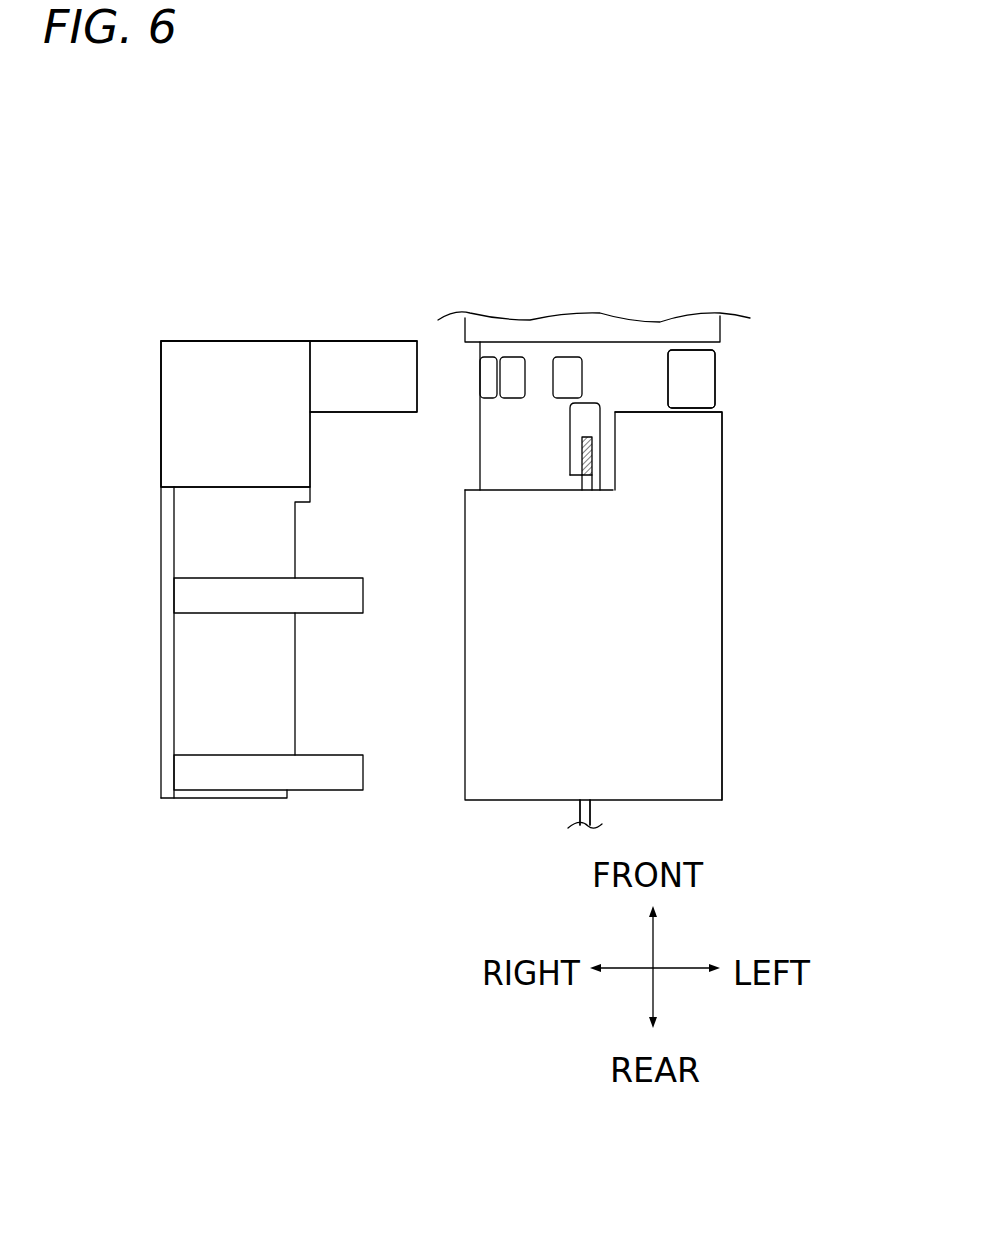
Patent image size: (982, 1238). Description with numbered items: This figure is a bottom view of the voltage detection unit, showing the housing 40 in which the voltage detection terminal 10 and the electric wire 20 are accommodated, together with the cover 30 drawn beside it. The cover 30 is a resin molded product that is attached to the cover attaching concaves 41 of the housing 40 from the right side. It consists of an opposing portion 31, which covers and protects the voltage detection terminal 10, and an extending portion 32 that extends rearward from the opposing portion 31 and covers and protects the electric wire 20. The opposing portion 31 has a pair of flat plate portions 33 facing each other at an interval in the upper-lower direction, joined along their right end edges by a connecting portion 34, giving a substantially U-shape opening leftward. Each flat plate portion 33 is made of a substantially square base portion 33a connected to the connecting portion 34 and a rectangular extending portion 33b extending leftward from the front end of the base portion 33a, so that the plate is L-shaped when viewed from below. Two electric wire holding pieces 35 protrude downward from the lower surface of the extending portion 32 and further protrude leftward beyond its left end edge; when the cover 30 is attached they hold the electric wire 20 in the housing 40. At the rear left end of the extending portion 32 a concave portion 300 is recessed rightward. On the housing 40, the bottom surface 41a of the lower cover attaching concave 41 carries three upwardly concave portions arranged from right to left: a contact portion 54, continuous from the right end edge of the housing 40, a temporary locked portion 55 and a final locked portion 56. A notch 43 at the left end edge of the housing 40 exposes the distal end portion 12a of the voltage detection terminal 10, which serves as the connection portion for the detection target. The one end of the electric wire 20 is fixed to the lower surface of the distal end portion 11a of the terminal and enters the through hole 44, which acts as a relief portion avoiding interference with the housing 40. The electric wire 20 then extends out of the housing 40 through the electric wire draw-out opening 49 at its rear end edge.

The cover 30 is at (237, 554).
The opposing portion 31 is at (289, 277).
The flat plate portions 33 is at (385, 273).
The base portion 33a is at (238, 412).
The extending portion 33b is at (355, 373).
The connecting portion 34 is at (161, 418).
The extending portion 32 is at (208, 673).
The electric wire holding pieces 35 is at (336, 578).
The concave portion 300 is at (288, 798).
The housing 40 is at (626, 514).
The cover attaching concaves 41 is at (594, 309).
The bottom surface 41a is at (635, 357).
The contact portion 54 is at (489, 365).
The temporary locked portion 55 is at (512, 370).
The final locked portion 56 is at (567, 372).
The voltage detection terminal 10 is at (713, 572).
The distal end portion 12a is at (696, 369).
The distal end portion 11a is at (596, 427).
The notch 43 is at (696, 411).
The through hole 44 is at (578, 431).
The electric wire 20 is at (576, 455).
The electric wire draw-out opening 49 is at (591, 800).